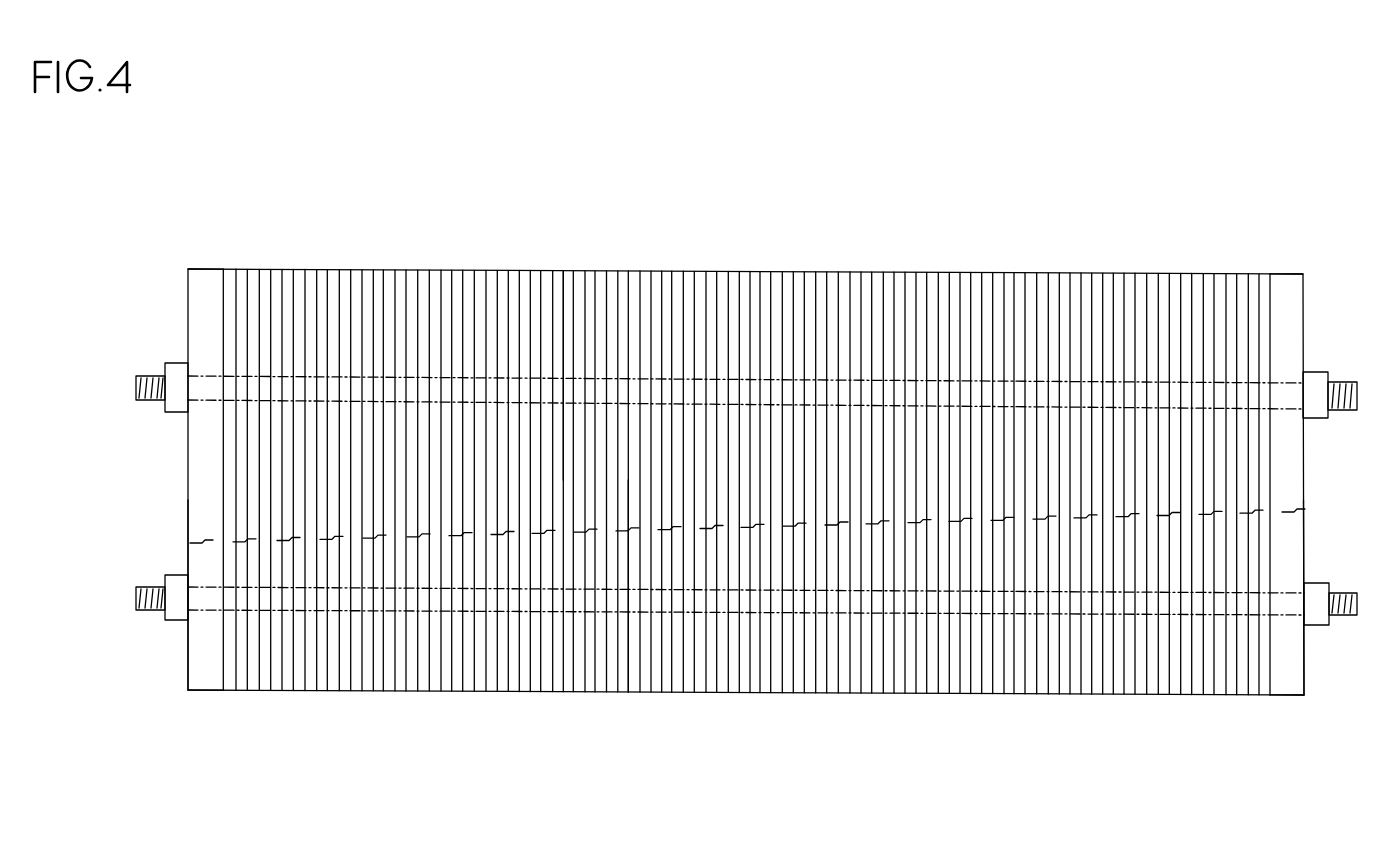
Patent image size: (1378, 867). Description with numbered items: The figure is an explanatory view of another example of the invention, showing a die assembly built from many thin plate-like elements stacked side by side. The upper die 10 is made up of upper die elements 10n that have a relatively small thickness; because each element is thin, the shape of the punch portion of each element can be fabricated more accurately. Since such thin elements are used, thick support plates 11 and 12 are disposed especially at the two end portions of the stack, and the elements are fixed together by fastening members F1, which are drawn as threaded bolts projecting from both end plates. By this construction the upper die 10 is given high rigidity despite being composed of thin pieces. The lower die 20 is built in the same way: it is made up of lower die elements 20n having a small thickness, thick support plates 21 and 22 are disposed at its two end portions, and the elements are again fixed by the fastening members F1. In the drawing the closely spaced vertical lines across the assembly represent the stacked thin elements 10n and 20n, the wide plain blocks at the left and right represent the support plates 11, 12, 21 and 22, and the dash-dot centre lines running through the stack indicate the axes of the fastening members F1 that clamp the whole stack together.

The upper die 10 is at (704, 254).
The upper die elements 10n is at (562, 269).
The support plate 11 is at (206, 303).
The support plate 12 is at (1282, 300).
The lower die 20 is at (820, 727).
The lower die elements 20n is at (624, 691).
The support plate 21 is at (199, 675).
The support plate 22 is at (1286, 680).
The fastening members F1 is at (169, 374).